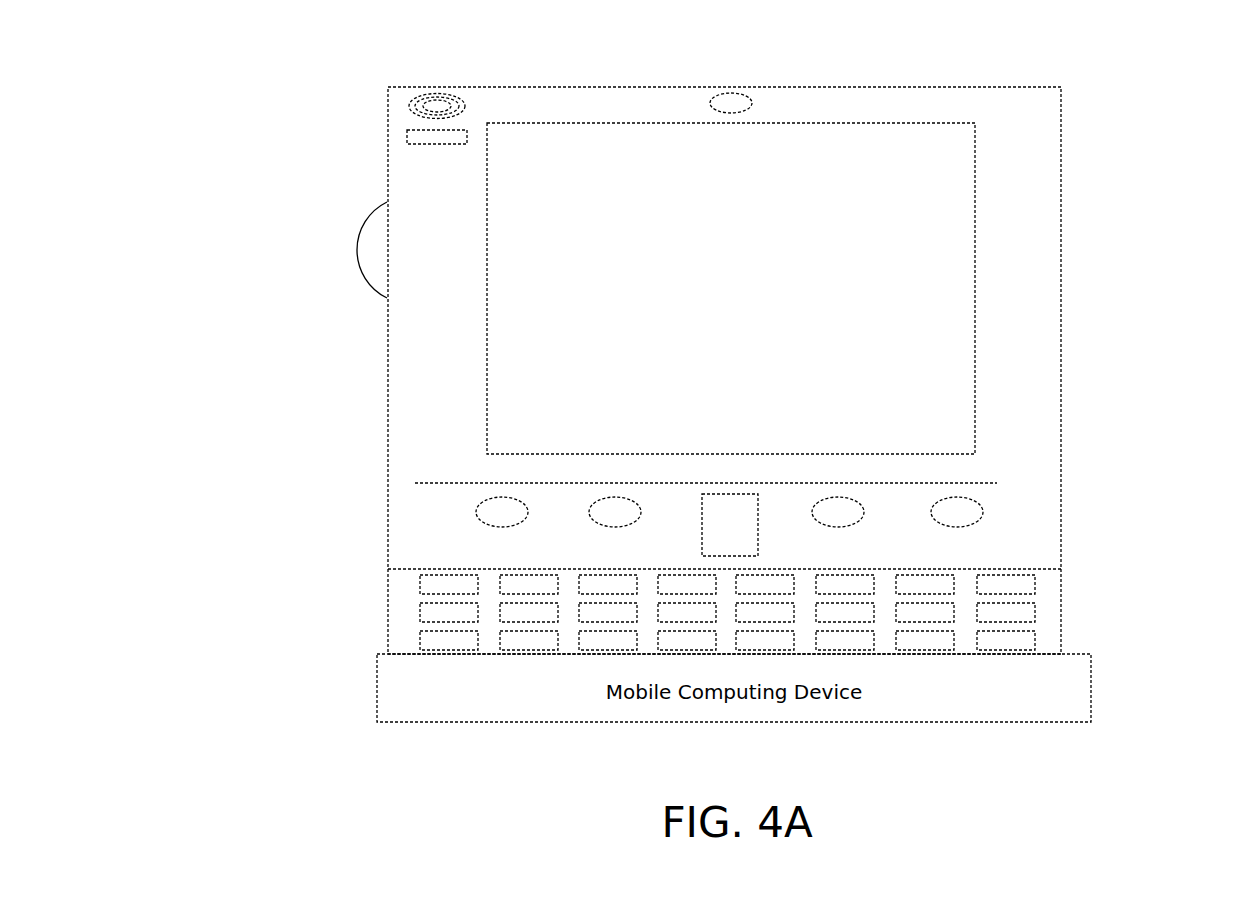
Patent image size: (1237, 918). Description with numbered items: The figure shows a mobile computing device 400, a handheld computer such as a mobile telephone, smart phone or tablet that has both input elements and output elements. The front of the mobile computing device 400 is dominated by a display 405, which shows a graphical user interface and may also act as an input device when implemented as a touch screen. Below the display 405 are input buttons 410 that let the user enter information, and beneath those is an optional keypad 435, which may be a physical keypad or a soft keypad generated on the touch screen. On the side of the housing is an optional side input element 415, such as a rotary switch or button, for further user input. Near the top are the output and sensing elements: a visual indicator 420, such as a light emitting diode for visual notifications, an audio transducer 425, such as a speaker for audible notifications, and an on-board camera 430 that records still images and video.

The mobile computing device 400 is at (1047, 100).
The display 405 is at (638, 398).
The input buttons 410 is at (730, 527).
The side input element 415 is at (375, 249).
The visual indicator 420 is at (406, 137).
The audio transducer 425 is at (410, 107).
The on-board camera 430 is at (752, 103).
The keypad 435 is at (400, 643).